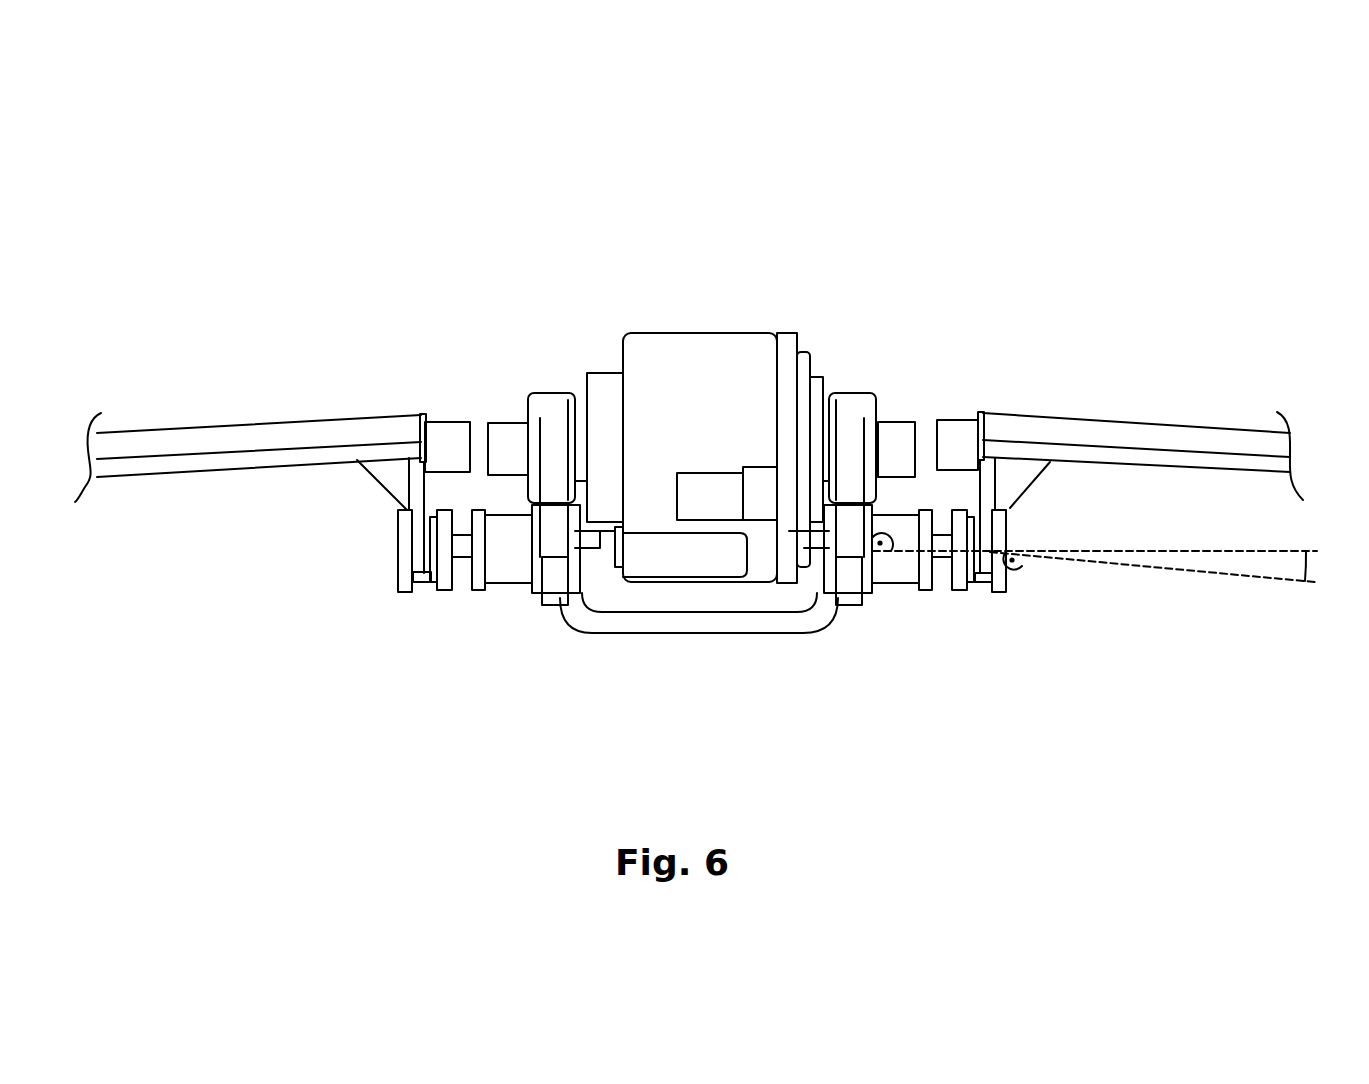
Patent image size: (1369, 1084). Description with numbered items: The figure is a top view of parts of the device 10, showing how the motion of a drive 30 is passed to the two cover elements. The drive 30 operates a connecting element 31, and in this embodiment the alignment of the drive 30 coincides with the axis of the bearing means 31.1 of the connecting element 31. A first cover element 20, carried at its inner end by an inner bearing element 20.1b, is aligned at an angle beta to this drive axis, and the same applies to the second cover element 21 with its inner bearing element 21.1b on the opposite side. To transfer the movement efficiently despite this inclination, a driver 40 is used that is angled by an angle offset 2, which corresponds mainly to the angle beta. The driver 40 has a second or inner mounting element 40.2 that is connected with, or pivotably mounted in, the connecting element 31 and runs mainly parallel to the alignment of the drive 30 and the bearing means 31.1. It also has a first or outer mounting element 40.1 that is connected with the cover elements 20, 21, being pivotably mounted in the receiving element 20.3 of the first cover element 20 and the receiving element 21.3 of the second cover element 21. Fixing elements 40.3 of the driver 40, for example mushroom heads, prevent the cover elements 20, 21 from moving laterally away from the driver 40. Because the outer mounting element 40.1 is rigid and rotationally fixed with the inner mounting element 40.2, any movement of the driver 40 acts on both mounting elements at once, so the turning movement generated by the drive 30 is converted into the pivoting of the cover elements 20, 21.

The device 10 is at (984, 227).
The first cover element 20 is at (185, 458).
The inner bearing element 20.1b is at (447, 440).
The receiving element 20.3 is at (398, 522).
The second cover element 21 is at (1197, 438).
The inner bearing element 21.1b is at (955, 425).
The receiving element 21.3 is at (985, 540).
The drive 30 is at (717, 418).
The connecting element 31 is at (847, 393).
The bearing means 31.1 is at (508, 433).
The driver 40 is at (715, 623).
The first mounting element 40.1 is at (422, 582).
The second mounting element 40.2 is at (557, 570).
The fixing element 40.3 is at (403, 550).
The angle offset 2 is at (1308, 574).